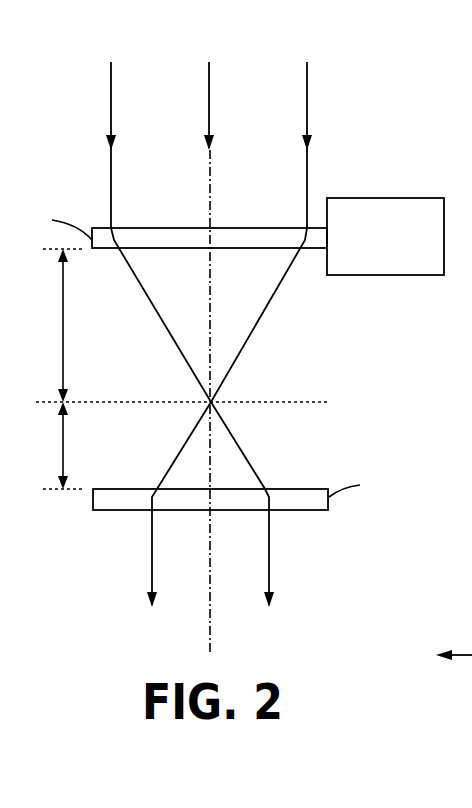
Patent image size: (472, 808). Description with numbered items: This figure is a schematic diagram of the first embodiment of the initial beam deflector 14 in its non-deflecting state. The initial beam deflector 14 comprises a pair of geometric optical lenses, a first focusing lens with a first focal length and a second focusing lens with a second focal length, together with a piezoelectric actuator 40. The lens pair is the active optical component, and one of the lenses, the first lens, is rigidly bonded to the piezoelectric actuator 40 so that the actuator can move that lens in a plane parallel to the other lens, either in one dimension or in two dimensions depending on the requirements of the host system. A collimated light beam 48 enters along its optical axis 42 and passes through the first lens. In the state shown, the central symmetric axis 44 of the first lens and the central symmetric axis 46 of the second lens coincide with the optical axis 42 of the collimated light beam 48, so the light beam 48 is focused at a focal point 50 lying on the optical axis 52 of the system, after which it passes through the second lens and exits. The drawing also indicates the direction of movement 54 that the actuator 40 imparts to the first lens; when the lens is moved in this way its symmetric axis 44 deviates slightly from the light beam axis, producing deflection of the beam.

The initial beam deflector 14 is at (362, 103).
The piezoelectric actuator 40 is at (400, 253).
The optical axis of collimated light beam 42 is at (210, 120).
The central symmetric axis of lens L1 44 is at (211, 257).
The central symmetric axis of lens L2 46 is at (211, 605).
The collimated light beam 48 is at (198, 78).
The focal point 50 is at (212, 401).
The optical axis of the system 52 is at (211, 316).
The movement of lens L1 54 is at (471, 636).